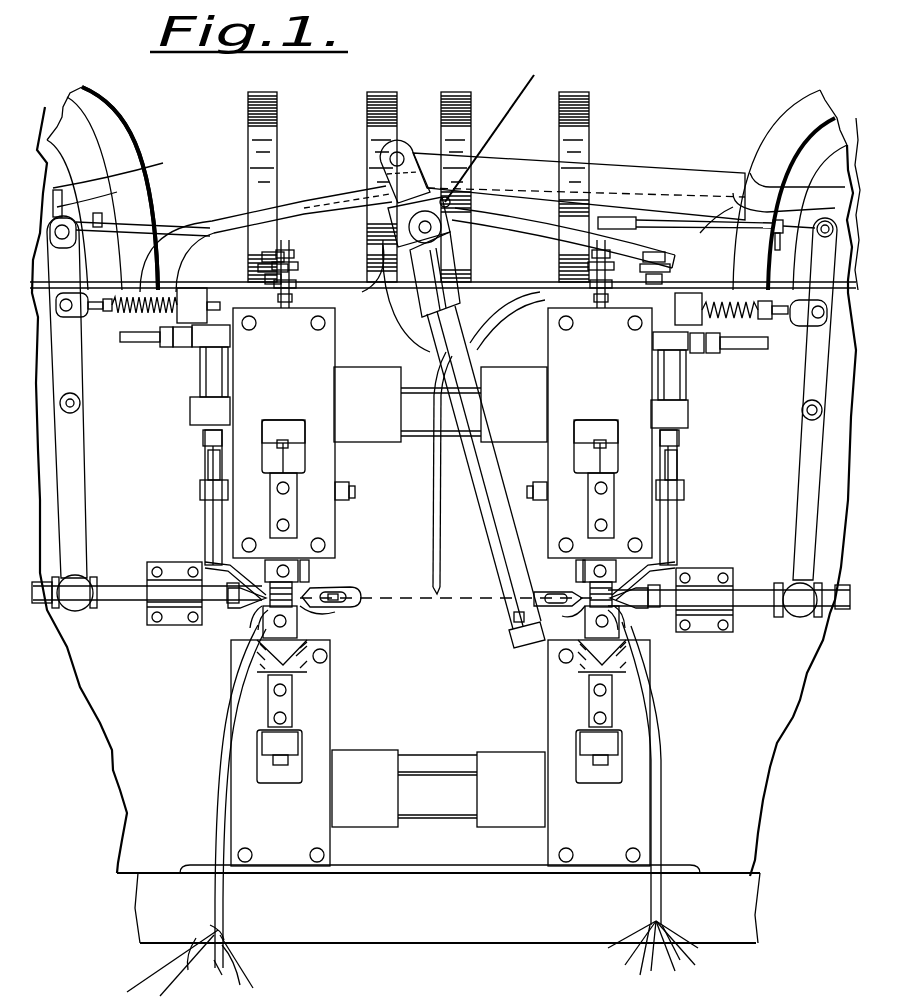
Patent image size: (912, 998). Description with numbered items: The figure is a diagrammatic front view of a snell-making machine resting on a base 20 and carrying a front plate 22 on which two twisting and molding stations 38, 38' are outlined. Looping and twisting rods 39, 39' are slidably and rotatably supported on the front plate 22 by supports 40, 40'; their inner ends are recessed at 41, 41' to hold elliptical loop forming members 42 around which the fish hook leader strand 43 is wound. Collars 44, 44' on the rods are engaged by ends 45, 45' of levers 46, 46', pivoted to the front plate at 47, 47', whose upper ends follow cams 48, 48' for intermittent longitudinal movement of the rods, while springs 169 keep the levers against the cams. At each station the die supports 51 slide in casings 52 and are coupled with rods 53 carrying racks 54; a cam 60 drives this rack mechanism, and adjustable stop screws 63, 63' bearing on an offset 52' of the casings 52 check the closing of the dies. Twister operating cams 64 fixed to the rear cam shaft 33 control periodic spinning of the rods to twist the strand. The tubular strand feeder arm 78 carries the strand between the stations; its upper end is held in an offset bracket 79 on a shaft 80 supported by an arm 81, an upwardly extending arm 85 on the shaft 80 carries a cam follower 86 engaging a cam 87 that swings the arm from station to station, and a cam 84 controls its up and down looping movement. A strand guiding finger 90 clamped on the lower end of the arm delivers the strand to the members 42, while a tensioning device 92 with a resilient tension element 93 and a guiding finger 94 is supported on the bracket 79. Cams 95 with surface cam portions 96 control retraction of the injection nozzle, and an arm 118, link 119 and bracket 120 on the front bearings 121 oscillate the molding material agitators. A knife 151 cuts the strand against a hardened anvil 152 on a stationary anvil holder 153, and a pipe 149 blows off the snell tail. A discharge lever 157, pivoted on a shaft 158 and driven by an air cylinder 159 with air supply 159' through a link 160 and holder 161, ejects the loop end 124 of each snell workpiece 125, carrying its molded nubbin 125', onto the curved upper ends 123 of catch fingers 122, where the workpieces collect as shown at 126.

The base 20 is at (446, 920).
The front plate 22 is at (752, 798).
The longitudinal rear cam shaft 33 is at (493, 250).
The twisting and molding station 38 is at (629, 436).
The twisting and molding station 38' is at (243, 436).
The looping and twisting rod 39 is at (729, 619).
The looping and twisting rod 39' is at (147, 627).
The support 40 is at (734, 622).
The support 40' is at (165, 624).
The recess 41 is at (701, 634).
The recess 41' is at (203, 620).
The elliptical loop forming member 42 is at (244, 598).
The fish hook leader strand 43 is at (530, 88).
The collars 44 is at (783, 583).
The collars 44' is at (77, 617).
The lever end 45 is at (813, 624).
The lever end 45' is at (94, 571).
The lever 46 is at (795, 399).
The lever 46' is at (89, 397).
The pivot 47 is at (786, 411).
The pivot 47' is at (101, 410).
The cam 48 is at (842, 110).
The cam 48' is at (53, 106).
The die support 51 is at (300, 560).
The casing 52 is at (440, 398).
The offset 52' is at (441, 586).
The rod 53 is at (285, 245).
The rack 54 is at (268, 428).
The cam 60 is at (390, 92).
The adjustable stop screw 63 is at (443, 420).
The adjustable stop screw 63' is at (437, 775).
The twister operating cam 64 is at (277, 92).
The strand feeder arm 78 is at (497, 552).
The offset bracket 79 is at (420, 310).
The shaft 80 is at (397, 257).
The arm 81 is at (240, 222).
The cam 84 is at (146, 170).
The upwardly extending arm 85 is at (392, 186).
The cam follower 86 is at (625, 178).
The cam 87 is at (775, 143).
The strand guiding finger 90 is at (512, 626).
The strand tensioning device 92 is at (458, 214).
The tension element 93 is at (484, 228).
The finger 94 is at (490, 143).
The cam 95 is at (123, 121).
The surface cam portion 96 is at (67, 127).
The arm 118 is at (258, 268).
The link 119 is at (140, 222).
The bracket 120 is at (446, 206).
The front bearings 121 is at (752, 174).
The workpiece catch finger 122 is at (216, 744).
The curved upper end 123 is at (252, 622).
The loop end 124 is at (213, 928).
The snell workpiece 125 is at (154, 963).
The nubbin 125' is at (294, 966).
The collected workpieces 126 is at (232, 932).
The pipe 149 is at (432, 540).
The knife 151 is at (306, 572).
The hardened anvil 152 is at (318, 614).
The stationary anvil holder 153 is at (348, 588).
The discharge lever 157 is at (206, 564).
The shaft 158 is at (208, 470).
The air cylinder 159 is at (438, 376).
The air supply 159' is at (446, 358).
The link 160 is at (205, 442).
The holder 161 is at (202, 497).
The spring 169 is at (132, 318).